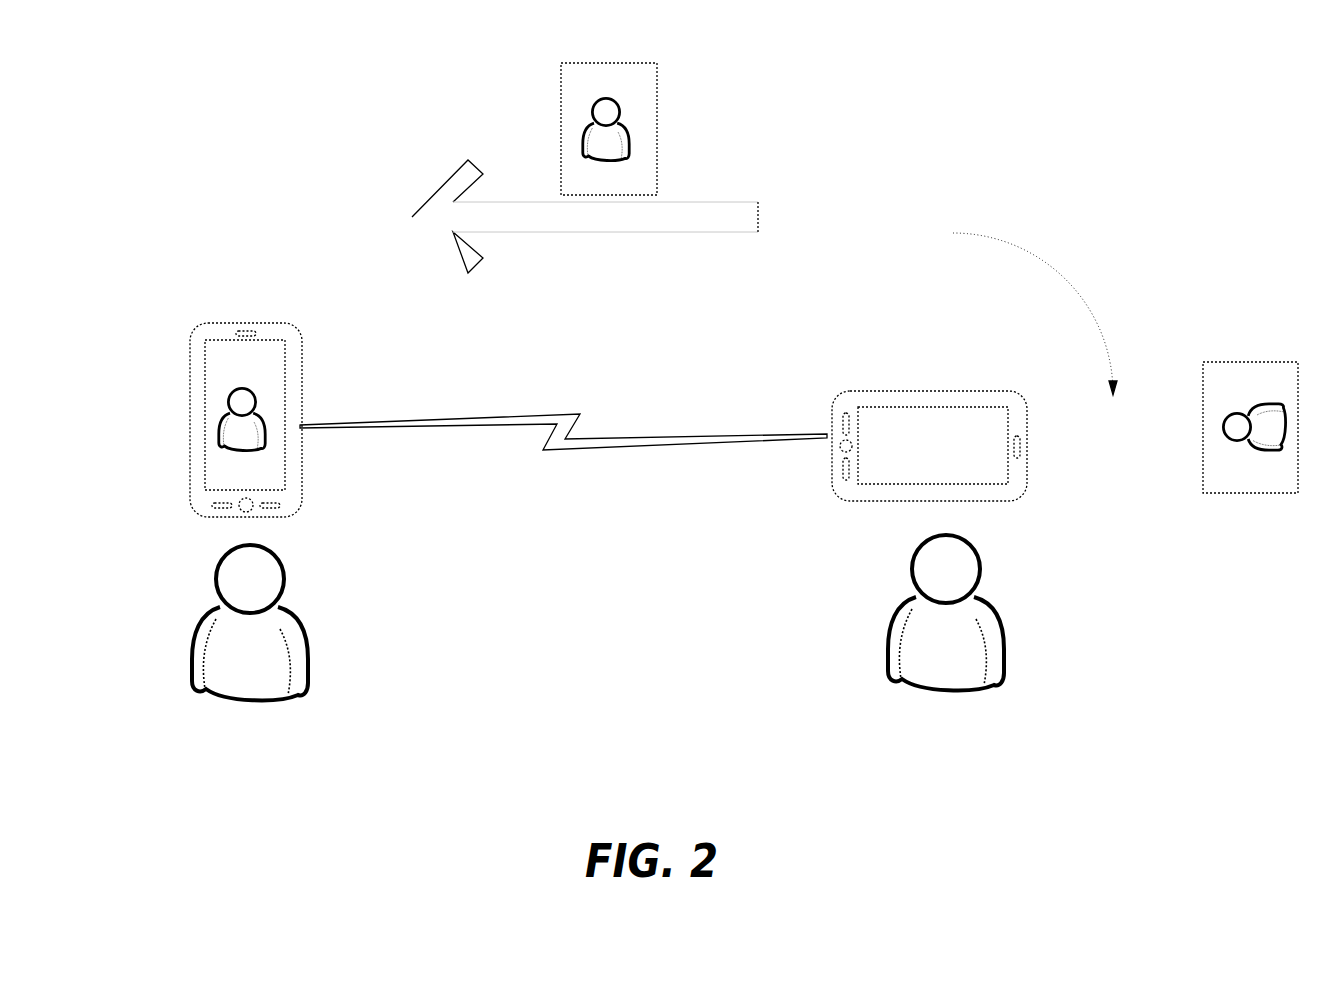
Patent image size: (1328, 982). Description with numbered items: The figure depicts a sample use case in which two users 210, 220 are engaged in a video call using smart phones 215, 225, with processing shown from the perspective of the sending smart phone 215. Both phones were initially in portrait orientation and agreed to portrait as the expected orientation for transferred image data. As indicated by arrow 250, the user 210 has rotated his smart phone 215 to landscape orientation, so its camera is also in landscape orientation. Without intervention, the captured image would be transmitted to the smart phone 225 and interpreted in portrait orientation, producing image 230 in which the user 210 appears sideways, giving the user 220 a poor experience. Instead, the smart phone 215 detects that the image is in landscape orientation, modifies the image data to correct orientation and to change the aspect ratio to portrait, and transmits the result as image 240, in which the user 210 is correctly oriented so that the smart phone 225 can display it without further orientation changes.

The user 210 is at (1007, 713).
The smart phone 215 is at (830, 375).
The user 220 is at (322, 698).
The smart phone 225 is at (192, 322).
The image 230 is at (1270, 362).
The image 240 is at (660, 90).
The arrow 250 is at (1050, 247).